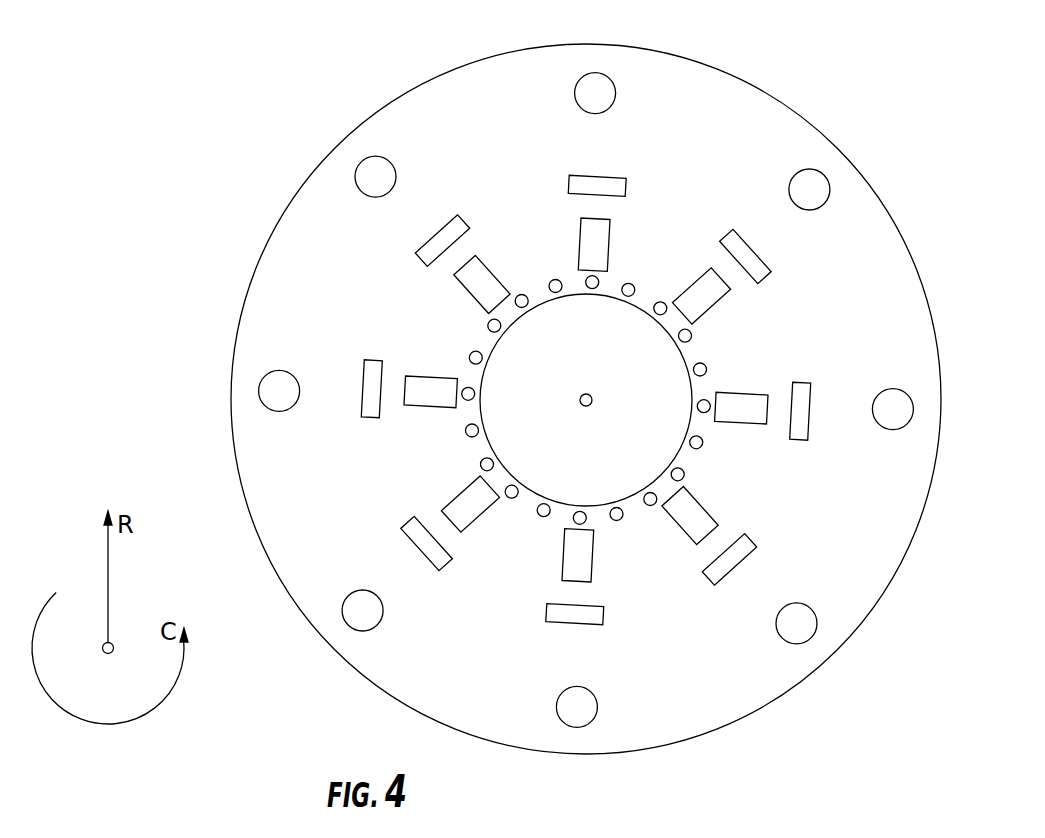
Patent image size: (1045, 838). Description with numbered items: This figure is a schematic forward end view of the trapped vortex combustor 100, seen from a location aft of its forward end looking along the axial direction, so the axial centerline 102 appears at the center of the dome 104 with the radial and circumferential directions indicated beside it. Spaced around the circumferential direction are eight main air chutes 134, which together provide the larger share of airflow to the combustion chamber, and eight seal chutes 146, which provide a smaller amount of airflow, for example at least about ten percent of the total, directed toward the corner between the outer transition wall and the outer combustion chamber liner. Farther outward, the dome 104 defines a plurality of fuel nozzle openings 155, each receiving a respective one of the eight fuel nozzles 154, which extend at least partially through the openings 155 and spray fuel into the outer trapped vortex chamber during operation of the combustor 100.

The trapped vortex combustor 100 is at (315, 121).
The axial centerline 102 is at (590, 393).
The dome 104 is at (723, 150).
The main air chutes 134 is at (609, 251).
The seal chutes 146 is at (567, 186).
The fuel nozzles 154 is at (533, 363).
The fuel nozzle openings 155 is at (600, 88).